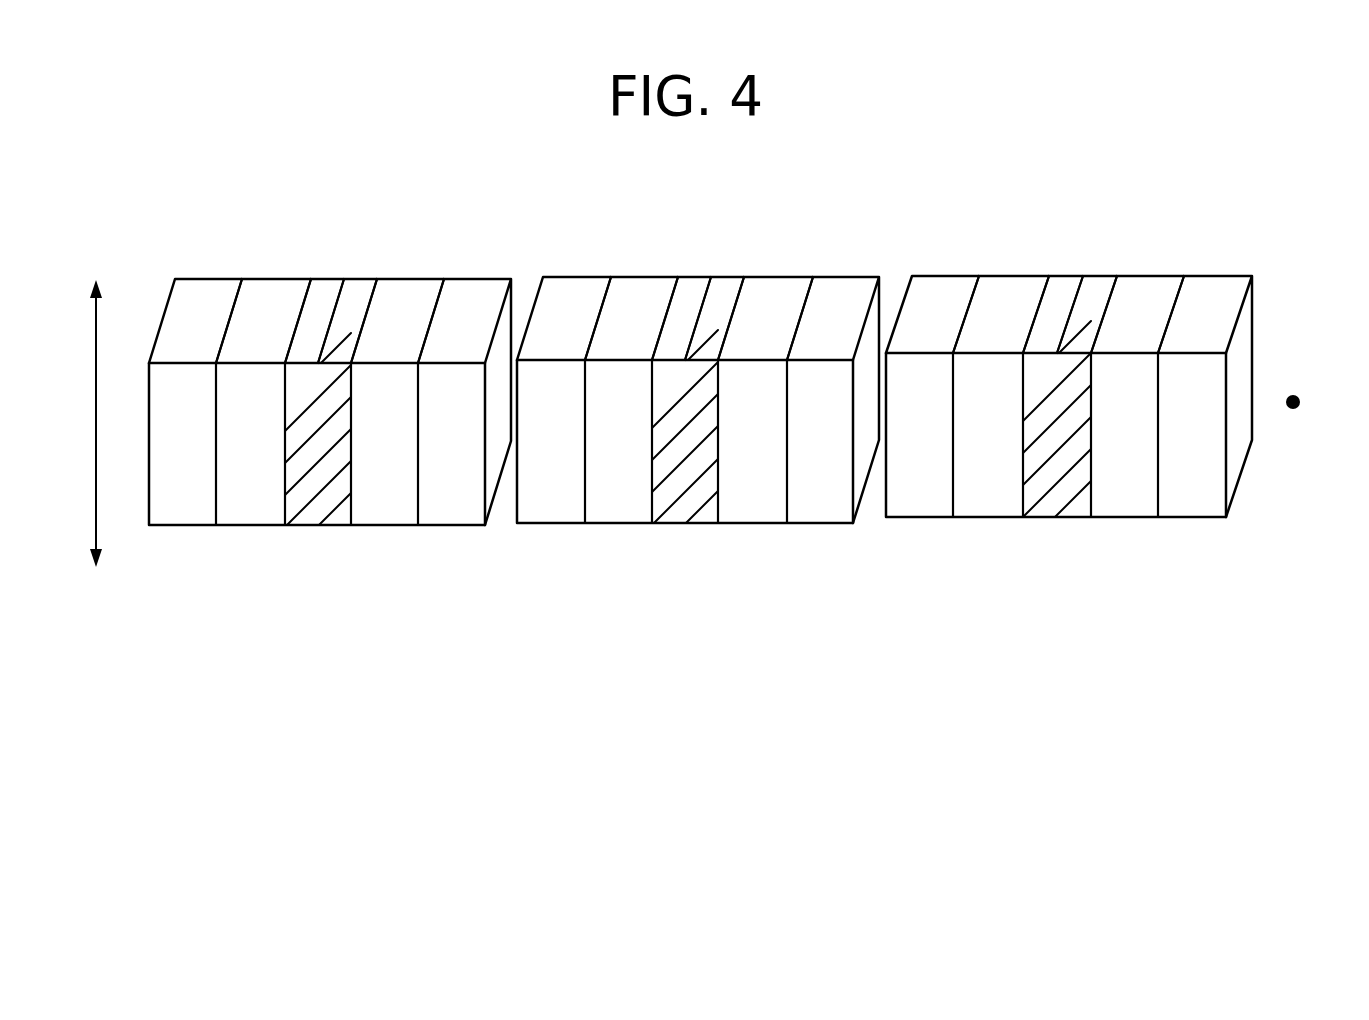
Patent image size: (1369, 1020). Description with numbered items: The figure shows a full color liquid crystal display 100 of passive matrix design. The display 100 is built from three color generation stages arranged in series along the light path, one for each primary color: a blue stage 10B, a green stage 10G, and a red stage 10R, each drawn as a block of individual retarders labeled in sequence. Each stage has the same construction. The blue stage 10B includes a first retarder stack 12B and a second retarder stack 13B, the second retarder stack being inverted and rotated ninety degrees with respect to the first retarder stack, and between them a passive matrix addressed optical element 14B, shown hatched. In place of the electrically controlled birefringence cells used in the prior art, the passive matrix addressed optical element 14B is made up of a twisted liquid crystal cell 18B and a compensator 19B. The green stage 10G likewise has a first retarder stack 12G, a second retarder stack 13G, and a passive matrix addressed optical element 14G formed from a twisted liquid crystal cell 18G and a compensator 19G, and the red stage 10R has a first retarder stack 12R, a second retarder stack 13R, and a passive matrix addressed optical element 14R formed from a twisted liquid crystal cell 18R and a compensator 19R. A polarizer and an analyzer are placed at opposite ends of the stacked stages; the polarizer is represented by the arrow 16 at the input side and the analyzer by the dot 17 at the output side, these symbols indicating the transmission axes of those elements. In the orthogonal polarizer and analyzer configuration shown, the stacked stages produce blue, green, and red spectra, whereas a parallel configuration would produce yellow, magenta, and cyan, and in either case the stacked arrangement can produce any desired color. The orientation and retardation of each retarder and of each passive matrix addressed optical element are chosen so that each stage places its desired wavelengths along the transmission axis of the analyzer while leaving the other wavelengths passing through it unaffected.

The full color liquid crystal display 100 is at (940, 172).
The blue color generation stage 10B is at (487, 565).
The green color generation stage 10G is at (517, 565).
The red color generation stage 10R is at (886, 560).
The first retarder stack 12B is at (246, 267).
The second retarder stack 13B is at (444, 267).
The passive matrix addressed optical element 14B is at (342, 266).
The twisted liquid crystal cell 18B is at (322, 295).
The compensator 19B is at (368, 290).
The first retarder stack 12G is at (615, 265).
The second retarder stack 13G is at (811, 265).
The passive matrix addressed optical element 14G is at (709, 264).
The twisted liquid crystal cell 18G is at (690, 293).
The compensator 19G is at (735, 288).
The first retarder stack 12R is at (983, 264).
The second retarder stack 13R is at (1181, 264).
The passive matrix addressed optical element 14R is at (1079, 263).
The twisted liquid crystal cell 18R is at (1059, 293).
The compensator 19R is at (1107, 288).
The arrow 16 is at (81, 375).
The dot 17 is at (1305, 371).